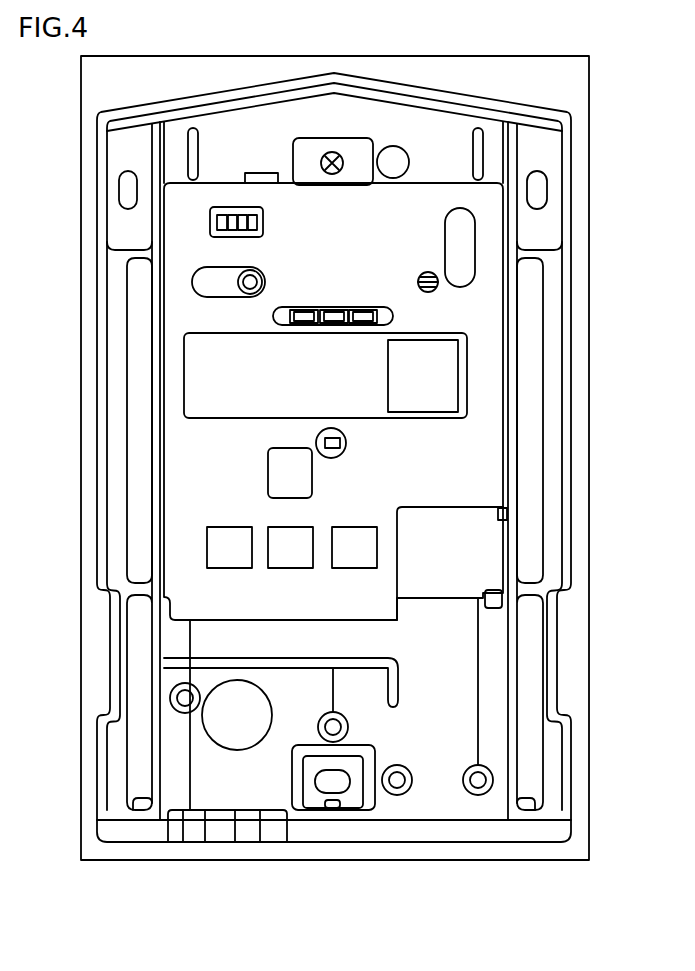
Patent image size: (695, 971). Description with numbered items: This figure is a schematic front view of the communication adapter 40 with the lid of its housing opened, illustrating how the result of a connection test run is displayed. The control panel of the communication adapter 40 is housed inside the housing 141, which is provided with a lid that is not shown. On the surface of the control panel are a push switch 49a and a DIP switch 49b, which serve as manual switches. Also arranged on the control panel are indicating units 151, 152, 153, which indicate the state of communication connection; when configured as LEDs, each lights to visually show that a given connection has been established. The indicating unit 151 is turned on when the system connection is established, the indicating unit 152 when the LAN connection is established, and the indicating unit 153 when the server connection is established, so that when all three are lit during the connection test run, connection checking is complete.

The communication adapter 40 is at (532, 888).
The housing 141 is at (589, 499).
The push switch 49a is at (258, 267).
The DIP switch 49b is at (250, 207).
The indicating unit 151 is at (305, 307).
The indicating unit 152 is at (333, 307).
The indicating unit 153 is at (363, 307).